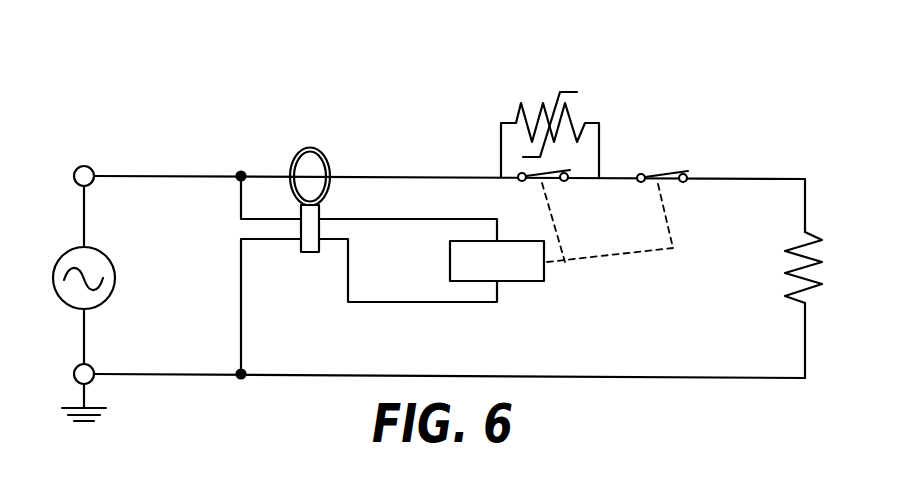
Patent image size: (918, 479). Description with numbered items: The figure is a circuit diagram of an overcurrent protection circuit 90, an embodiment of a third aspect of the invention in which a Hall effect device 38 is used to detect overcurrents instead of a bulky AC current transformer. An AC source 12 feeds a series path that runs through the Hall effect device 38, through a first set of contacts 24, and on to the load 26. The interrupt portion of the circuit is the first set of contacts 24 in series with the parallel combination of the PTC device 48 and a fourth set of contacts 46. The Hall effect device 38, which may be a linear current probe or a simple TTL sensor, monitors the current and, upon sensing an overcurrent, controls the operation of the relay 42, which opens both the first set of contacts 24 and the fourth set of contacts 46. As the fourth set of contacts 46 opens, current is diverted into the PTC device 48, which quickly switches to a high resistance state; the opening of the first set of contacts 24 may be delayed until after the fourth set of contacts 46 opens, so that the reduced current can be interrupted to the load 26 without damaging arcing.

The AC power source 12 is at (52, 297).
The first set of contacts 24 is at (672, 184).
The load 26 is at (812, 278).
The Hall effect device 38 is at (295, 246).
The relay 42 is at (514, 271).
The fourth set of contacts 46 is at (554, 182).
The PTC device 48 is at (541, 110).
The overcurrent protection circuit 90 is at (678, 120).